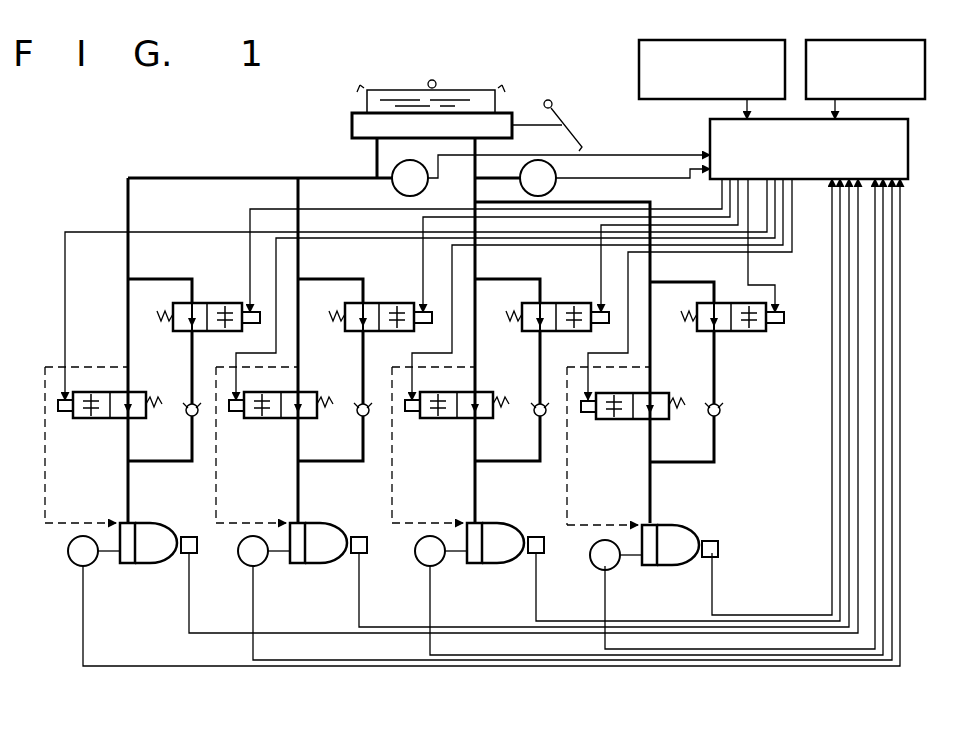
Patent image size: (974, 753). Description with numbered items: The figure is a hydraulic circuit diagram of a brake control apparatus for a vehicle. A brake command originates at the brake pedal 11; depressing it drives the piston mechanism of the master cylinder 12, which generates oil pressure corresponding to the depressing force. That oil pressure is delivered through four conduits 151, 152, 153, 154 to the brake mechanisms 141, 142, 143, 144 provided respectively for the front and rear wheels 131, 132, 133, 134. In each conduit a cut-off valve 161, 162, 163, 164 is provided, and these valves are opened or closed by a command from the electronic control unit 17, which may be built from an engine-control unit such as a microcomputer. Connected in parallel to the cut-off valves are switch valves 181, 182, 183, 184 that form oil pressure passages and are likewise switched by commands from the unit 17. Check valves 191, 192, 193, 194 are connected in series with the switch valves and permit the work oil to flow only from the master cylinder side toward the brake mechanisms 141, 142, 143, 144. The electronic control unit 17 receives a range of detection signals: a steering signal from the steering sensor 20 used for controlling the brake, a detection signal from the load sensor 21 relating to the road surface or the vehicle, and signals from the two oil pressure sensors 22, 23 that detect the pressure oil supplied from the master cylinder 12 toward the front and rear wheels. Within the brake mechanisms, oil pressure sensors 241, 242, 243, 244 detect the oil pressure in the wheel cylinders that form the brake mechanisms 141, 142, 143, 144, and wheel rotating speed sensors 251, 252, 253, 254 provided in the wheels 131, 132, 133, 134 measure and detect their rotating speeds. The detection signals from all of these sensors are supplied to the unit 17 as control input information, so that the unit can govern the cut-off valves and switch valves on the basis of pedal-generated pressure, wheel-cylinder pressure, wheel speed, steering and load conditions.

The brake pedal 11 is at (576, 140).
The master cylinder 12 is at (350, 116).
The electronic control unit 17 is at (912, 160).
The steering sensor 20 is at (748, 40).
The load sensor 21 is at (883, 40).
The oil pressure sensor 22 is at (426, 190).
The oil pressure sensor 23 is at (555, 190).
The wheel 131 is at (150, 565).
The wheel 132 is at (320, 565).
The wheel 133 is at (497, 565).
The wheel 134 is at (672, 567).
The brake mechanism 141 is at (128, 565).
The brake mechanism 142 is at (298, 565).
The brake mechanism 143 is at (475, 565).
The brake mechanism 144 is at (650, 567).
The conduit 151 is at (131, 250).
The conduit 152 is at (301, 250).
The conduit 153 is at (478, 262).
The conduit 154 is at (653, 262).
The cut-off valve 161 is at (100, 418).
The cut-off valve 162 is at (270, 418).
The cut-off valve 163 is at (446, 418).
The cut-off valve 164 is at (618, 419).
The switch valve 181 is at (207, 303).
The switch valve 182 is at (379, 303).
The switch valve 183 is at (554, 303).
The switch valve 184 is at (750, 331).
The check valve 191 is at (184, 398).
The check valve 192 is at (357, 398).
The check valve 193 is at (538, 398).
The check valve 194 is at (722, 410).
The oil pressure sensor 241 is at (72, 563).
The oil pressure sensor 242 is at (242, 563).
The oil pressure sensor 243 is at (419, 563).
The oil pressure sensor 244 is at (594, 567).
The wheel rotating speed sensor 251 is at (184, 535).
The wheel rotating speed sensor 252 is at (360, 537).
The wheel rotating speed sensor 253 is at (538, 537).
The wheel rotating speed sensor 254 is at (718, 541).